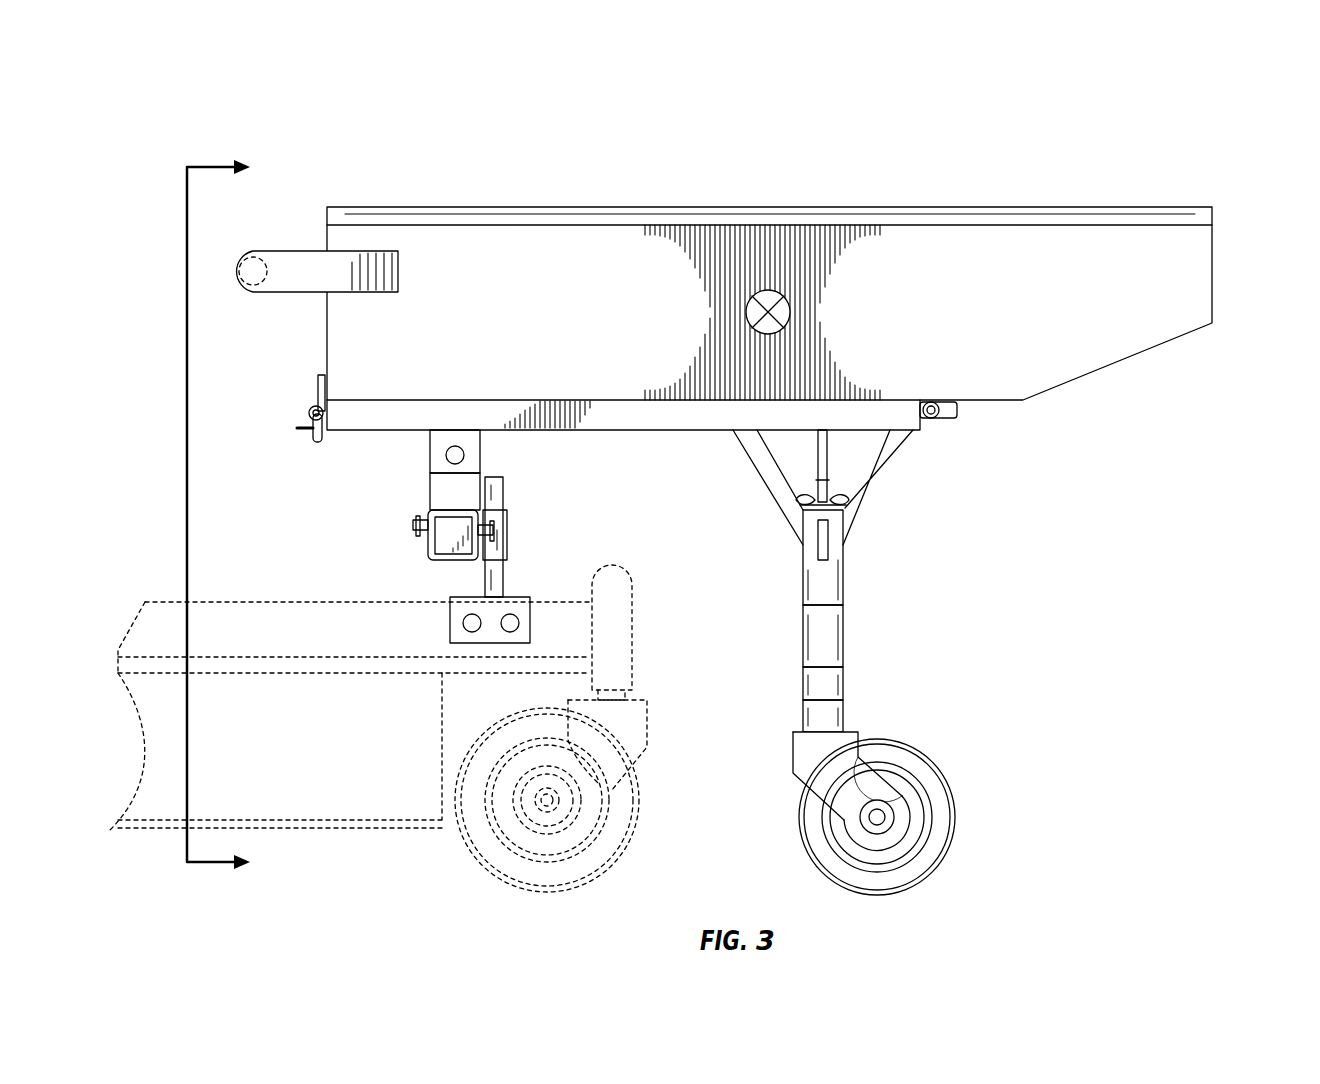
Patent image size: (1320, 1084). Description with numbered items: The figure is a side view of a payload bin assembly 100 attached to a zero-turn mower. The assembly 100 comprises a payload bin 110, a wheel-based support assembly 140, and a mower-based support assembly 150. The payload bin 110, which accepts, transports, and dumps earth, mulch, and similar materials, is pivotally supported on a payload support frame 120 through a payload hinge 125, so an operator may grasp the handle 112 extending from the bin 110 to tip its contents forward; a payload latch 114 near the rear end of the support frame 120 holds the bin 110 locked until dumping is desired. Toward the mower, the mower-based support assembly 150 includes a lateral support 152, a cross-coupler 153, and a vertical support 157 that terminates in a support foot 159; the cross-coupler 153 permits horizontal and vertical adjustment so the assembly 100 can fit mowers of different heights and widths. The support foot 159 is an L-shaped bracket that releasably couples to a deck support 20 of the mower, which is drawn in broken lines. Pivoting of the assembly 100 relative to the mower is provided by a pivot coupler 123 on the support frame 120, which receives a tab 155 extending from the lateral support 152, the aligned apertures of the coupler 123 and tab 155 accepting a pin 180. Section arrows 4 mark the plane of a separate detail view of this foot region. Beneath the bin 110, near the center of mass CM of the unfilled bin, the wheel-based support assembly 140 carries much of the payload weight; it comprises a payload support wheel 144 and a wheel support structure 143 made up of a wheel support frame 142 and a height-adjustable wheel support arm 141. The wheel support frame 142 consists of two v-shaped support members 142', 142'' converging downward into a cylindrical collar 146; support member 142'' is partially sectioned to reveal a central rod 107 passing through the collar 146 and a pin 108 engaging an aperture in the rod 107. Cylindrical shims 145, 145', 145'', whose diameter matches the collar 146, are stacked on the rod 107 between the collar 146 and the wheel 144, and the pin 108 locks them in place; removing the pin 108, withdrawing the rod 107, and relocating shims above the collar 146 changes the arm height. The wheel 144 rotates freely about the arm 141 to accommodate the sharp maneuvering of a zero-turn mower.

The payload bin assembly 100 is at (1205, 140).
The payload bin 110 is at (992, 207).
The handle 112 is at (288, 251).
The payload latch 114 is at (300, 396).
The payload support frame 120 is at (658, 415).
The first pivot coupler 123 is at (427, 452).
The payload hinge 125 is at (957, 412).
The central rod 107 is at (790, 465).
The pin 108 is at (848, 498).
The wheel-based support assembly 140 is at (906, 526).
The wheel support arm 141 is at (802, 621).
The wheel support frame 142 is at (897, 540).
The first v-shaped support member 142' is at (852, 487).
The second v-shaped support member 142'' is at (875, 300).
The wheel support structure 143 is at (851, 617).
The payload support wheel 144 is at (955, 822).
The cylindrical shim 145 is at (778, 711).
The cylindrical shim 145' is at (763, 679).
The cylindrical shim 145'' is at (773, 636).
The cylindrical collar 146 is at (803, 592).
The mower-based support assembly 150 is at (459, 559).
The lateral support 152 is at (447, 528).
The first cross-coupler 153 is at (505, 510).
The first tab 155 is at (450, 485).
The first vertical support 157 is at (492, 575).
The first support foot 159 is at (520, 605).
The first pin 180 is at (482, 457).
The first deck support 20 is at (325, 647).
The section line 4- 4 is at (218, 517).